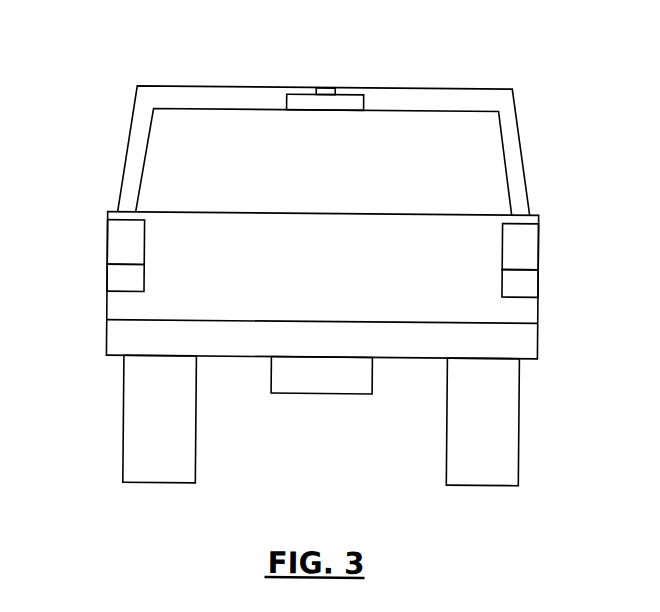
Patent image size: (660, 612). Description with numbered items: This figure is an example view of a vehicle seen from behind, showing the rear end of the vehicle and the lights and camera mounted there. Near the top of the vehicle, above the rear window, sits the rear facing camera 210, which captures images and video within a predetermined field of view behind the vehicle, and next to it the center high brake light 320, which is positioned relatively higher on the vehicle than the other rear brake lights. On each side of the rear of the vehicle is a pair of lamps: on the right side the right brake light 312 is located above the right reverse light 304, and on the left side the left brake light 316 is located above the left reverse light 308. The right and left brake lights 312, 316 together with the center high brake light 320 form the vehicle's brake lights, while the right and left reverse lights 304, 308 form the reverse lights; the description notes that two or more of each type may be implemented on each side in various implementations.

The rear facing camera 210 is at (326, 88).
The center high brake light 320 is at (362, 100).
The left brake light 316 is at (107, 243).
The left reverse light 308 is at (107, 278).
The right brake light 312 is at (538, 249).
The right reverse light 304 is at (538, 283).